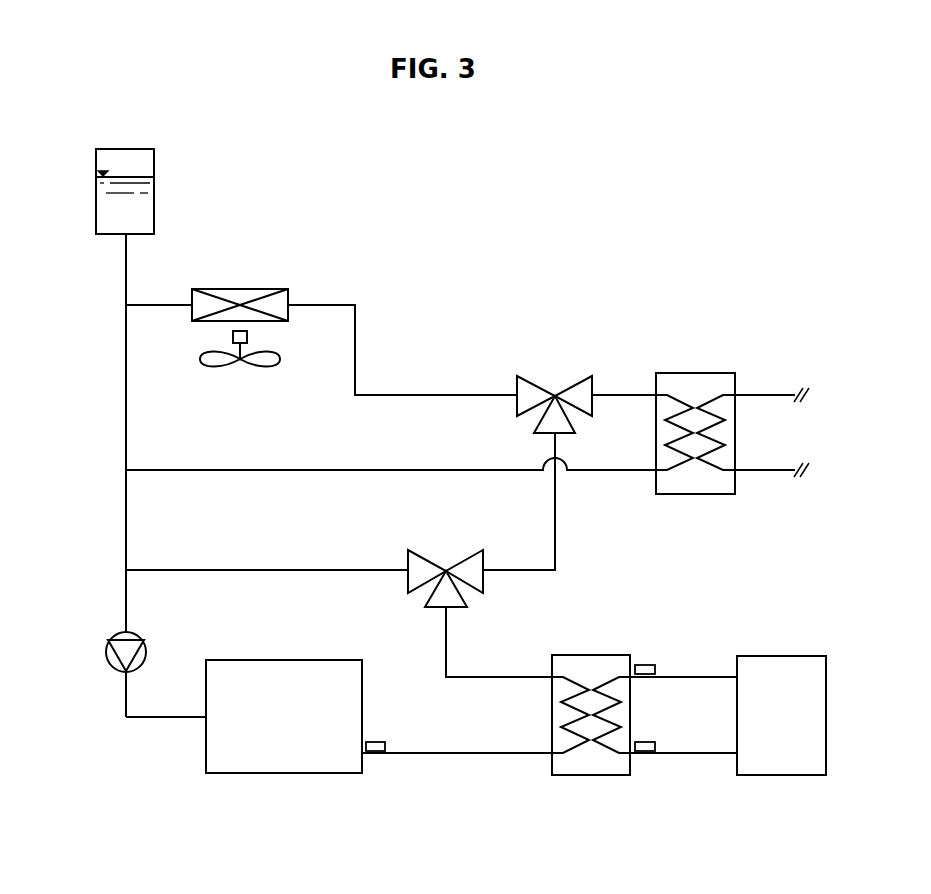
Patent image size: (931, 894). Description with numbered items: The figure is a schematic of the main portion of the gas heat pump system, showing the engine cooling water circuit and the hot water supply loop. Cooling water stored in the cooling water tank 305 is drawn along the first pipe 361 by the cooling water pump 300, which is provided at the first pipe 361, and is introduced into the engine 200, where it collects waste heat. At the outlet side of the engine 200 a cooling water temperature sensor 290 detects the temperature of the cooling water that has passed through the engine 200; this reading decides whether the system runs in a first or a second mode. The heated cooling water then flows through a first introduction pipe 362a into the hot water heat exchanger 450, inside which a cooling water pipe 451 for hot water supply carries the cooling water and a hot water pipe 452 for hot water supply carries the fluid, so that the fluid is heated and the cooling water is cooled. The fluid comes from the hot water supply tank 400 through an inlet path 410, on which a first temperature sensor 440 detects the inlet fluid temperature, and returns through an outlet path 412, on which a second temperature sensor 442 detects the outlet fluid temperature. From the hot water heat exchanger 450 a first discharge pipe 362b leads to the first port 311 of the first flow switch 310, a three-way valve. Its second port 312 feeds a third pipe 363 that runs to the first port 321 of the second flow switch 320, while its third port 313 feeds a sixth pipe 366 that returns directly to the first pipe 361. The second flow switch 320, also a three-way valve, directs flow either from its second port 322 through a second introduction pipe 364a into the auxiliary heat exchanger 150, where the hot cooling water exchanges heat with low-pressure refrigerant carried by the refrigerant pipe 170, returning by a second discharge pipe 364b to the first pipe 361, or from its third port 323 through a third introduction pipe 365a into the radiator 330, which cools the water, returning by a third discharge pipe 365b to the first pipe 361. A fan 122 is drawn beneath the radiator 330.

The cooling water tank 305 is at (126, 149).
The first pipe 361 is at (126, 426).
The third discharge pipe 365b is at (160, 305).
The radiator 330 is at (240, 289).
The cooling fan 122 is at (268, 366).
The third introduction pipe 365a is at (355, 376).
The second flow switch 320 is at (560, 361).
The first port of the second flow switch 321 is at (540, 430).
The second port of the second flow switch 322 is at (588, 407).
The third port of the second flow switch 323 is at (522, 385).
The second introduction pipe 364a is at (618, 393).
The auxiliary heat exchanger 150 is at (697, 373).
The refrigerant pipe 170 is at (779, 394).
The second discharge pipe 364b is at (607, 474).
The third pipe 363 is at (558, 557).
The sixth pipe 366 is at (242, 570).
The first flow switch 310 is at (450, 561).
The first port of the first flow switch 311 is at (432, 608).
The second port of the first flow switch 312 is at (480, 588).
The third port of the first flow switch 313 is at (413, 560).
The first discharge pipe 362b is at (499, 677).
The cooling water pump 300 is at (106, 652).
The engine 200 is at (282, 774).
The cooling water temperature sensor 290 is at (373, 752).
The first introduction pipe 362a is at (428, 755).
The hot water heat exchanger 450 is at (588, 718).
The cooling water pipe for hot water supply 451 is at (571, 742).
The hot water pipe for hot water supply 452 is at (610, 753).
The first temperature sensor 440 is at (645, 665).
The second temperature sensor 442 is at (645, 752).
The inlet path 410 is at (708, 677).
The outlet path 412 is at (695, 754).
The hot water supply tank 400 is at (777, 656).